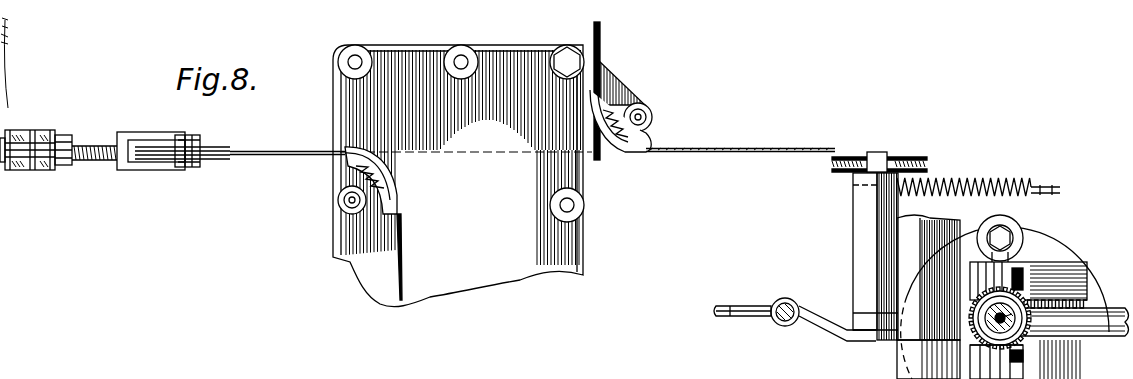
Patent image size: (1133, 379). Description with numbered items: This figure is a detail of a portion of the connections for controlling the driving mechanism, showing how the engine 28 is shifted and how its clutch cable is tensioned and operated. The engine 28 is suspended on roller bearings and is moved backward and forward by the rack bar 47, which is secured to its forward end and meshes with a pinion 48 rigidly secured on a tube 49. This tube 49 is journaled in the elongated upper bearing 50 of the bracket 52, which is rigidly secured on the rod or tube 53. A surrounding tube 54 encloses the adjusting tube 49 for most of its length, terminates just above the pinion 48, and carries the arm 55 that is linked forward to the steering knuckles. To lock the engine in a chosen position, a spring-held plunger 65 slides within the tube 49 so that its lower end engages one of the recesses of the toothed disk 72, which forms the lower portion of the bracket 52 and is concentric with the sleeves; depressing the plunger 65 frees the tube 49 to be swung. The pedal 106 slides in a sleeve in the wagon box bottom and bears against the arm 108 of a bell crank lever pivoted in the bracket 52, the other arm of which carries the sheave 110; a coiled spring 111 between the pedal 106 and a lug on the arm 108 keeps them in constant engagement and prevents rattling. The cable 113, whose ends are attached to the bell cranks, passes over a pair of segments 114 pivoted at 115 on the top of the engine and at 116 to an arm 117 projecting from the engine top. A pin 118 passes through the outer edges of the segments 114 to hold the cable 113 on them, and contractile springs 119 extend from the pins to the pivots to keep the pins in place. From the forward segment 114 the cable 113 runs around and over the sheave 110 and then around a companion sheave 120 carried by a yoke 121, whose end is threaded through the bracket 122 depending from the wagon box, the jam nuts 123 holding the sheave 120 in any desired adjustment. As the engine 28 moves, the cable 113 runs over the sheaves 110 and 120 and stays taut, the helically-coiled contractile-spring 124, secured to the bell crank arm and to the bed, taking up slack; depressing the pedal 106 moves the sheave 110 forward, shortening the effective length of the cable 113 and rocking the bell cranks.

The engine 28 is at (416, 54).
The rack bar 47 is at (1062, 262).
The pinion 48 is at (1022, 352).
The tube 49 is at (1012, 337).
The elongated upper bearing 50 is at (980, 343).
The bracket 52 is at (907, 340).
The rod or tube 53 is at (920, 248).
The tube 54 is at (990, 317).
The arm 55 is at (1098, 314).
The plunger 65 is at (992, 319).
The toothed disk 72 is at (1026, 246).
The pedal 106 is at (786, 302).
The arm 108 is at (828, 322).
The sheave 110 is at (833, 158).
The coiled spring 111 is at (730, 305).
The cable 113 is at (700, 148).
The segments 114 is at (628, 142).
The pivot 115 is at (346, 206).
The pivot 116 is at (641, 112).
The arm 117 is at (604, 82).
The pin 118 is at (502, 160).
The contractile springs 119 is at (376, 257).
The companion sheave 120 is at (209, 150).
The yoke 121 is at (125, 138).
The bracket 122 is at (40, 141).
The jam nuts 123 is at (5, 168).
The helically-coiled contractile-spring 124 is at (970, 184).